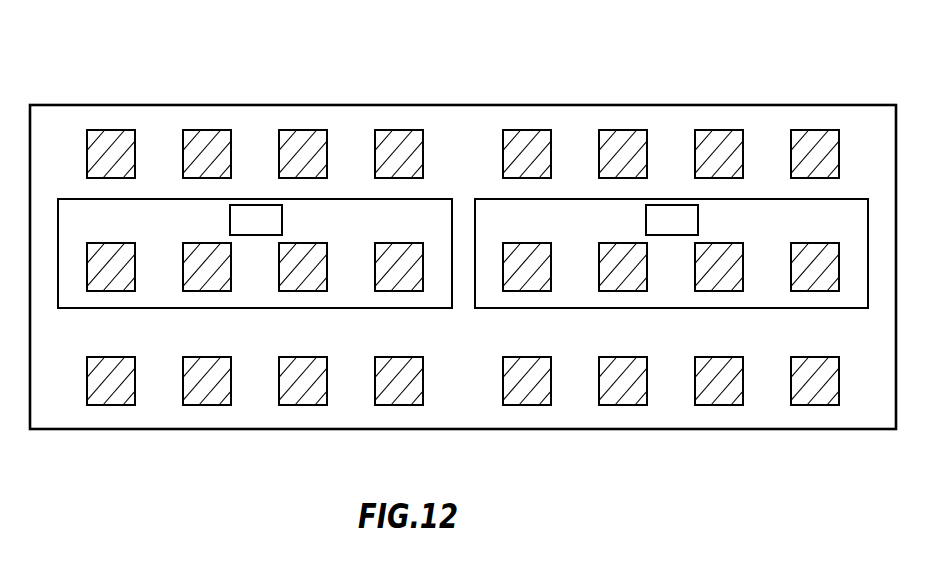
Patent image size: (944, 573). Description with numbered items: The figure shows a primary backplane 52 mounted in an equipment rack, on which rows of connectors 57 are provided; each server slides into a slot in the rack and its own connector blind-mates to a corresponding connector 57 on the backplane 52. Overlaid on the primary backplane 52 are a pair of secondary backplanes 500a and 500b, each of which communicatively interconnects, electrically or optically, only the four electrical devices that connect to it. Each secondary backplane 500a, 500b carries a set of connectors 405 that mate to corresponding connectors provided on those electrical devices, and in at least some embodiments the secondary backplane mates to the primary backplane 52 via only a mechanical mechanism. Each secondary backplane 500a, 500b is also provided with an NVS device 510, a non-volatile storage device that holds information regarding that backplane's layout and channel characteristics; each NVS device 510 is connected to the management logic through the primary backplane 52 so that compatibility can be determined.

The backplane 52 is at (100, 105).
The connector 57 is at (130, 130).
The connector 405 is at (185, 243).
The NVS device 510 is at (464, 220).
The secondary backplane 500a is at (145, 308).
The secondary backplane 500b is at (585, 308).